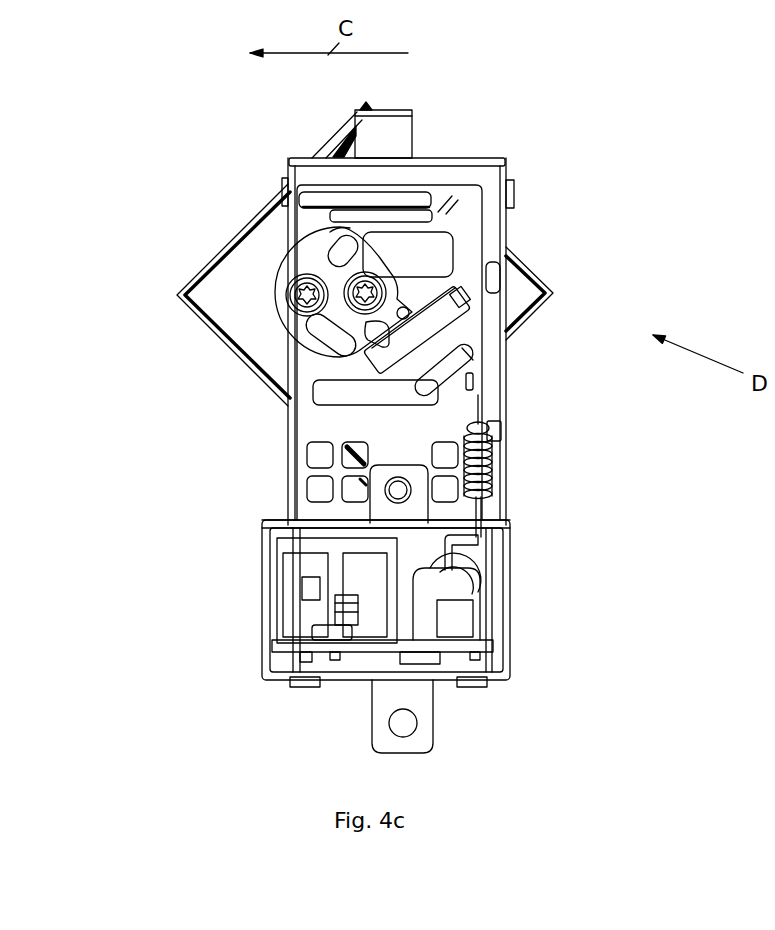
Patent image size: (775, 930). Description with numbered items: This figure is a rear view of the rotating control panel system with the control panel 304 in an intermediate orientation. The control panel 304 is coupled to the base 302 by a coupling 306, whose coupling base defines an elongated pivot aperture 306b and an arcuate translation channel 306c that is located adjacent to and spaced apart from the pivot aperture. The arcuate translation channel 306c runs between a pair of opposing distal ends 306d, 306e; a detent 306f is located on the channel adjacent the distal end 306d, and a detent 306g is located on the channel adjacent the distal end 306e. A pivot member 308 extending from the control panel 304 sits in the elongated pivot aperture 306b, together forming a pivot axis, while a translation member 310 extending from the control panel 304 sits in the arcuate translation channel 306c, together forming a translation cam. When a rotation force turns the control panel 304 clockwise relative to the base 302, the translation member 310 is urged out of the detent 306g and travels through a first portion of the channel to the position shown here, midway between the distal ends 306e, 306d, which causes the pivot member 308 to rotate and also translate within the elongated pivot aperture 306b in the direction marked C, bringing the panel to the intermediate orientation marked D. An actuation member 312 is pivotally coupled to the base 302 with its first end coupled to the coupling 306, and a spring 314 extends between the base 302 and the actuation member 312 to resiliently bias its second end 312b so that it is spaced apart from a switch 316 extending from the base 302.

The base 302 is at (312, 423).
The control panel 304 is at (222, 295).
The coupling 306 is at (438, 317).
The elongated pivot aperture 306b is at (408, 287).
The arcuate translation channel 306c is at (300, 322).
The distal end 306d is at (350, 343).
The distal end 306e is at (350, 235).
The detent 306f is at (323, 347).
The detent 306g is at (327, 243).
The pivot member 308 is at (370, 282).
The translation member 310 is at (296, 287).
The actuation member 312 is at (485, 383).
The second end 312b is at (430, 613).
The spring 314 is at (493, 467).
The switch 316 is at (448, 625).